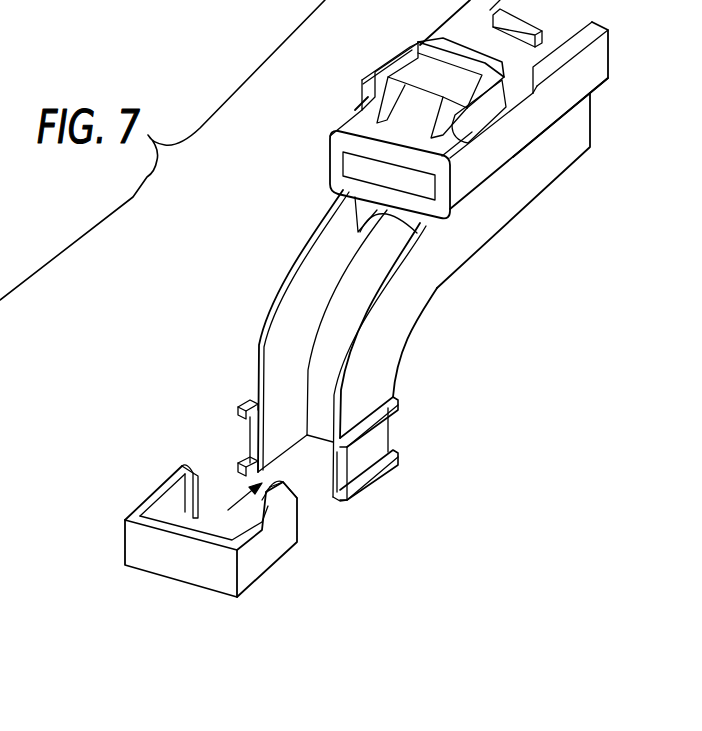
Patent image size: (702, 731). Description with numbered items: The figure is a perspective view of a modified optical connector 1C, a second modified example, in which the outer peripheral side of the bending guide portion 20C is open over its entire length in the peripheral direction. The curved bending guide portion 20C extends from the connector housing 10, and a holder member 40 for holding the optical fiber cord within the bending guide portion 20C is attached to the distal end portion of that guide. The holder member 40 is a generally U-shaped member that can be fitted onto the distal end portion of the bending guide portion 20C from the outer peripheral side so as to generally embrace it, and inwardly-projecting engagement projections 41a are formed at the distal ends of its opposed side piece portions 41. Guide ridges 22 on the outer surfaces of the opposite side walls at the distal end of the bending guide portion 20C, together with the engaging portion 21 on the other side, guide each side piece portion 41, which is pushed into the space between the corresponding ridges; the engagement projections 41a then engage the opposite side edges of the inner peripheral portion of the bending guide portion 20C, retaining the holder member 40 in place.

The modified optical connector 1C is at (288, 176).
The connector housing 10 is at (568, 166).
The bending guide portion 20C is at (440, 297).
The right engaging portion 21 is at (400, 400).
The guide ridges 22 is at (238, 464).
The holder member 40 is at (182, 571).
The side piece portions 41 is at (157, 484).
The engagement projections 41a is at (204, 494).